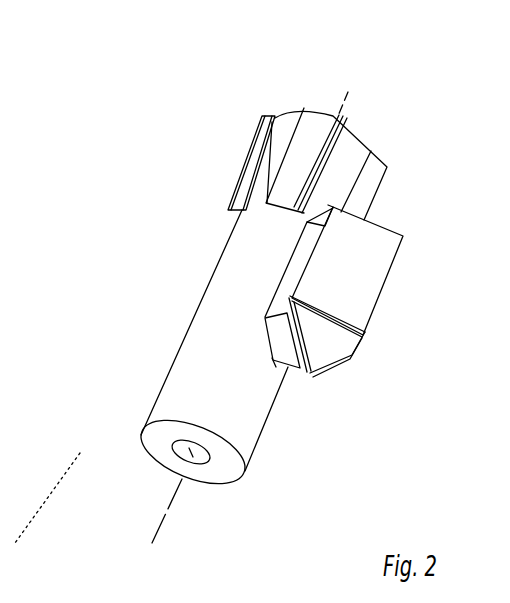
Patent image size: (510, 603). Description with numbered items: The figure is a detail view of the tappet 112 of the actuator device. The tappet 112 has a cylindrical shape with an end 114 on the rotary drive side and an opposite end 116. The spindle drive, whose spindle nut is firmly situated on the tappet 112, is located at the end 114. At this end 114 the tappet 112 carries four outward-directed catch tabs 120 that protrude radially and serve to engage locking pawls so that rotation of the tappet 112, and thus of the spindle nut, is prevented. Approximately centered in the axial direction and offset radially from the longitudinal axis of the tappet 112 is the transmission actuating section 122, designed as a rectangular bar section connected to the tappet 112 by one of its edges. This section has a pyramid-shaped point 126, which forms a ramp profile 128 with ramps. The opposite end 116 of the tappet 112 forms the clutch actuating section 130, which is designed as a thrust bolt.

The tappet 112 is at (212, 307).
The end on the rotary drive side 114 is at (304, 108).
The opposite end 116 is at (144, 453).
The catch tab 120 is at (292, 163).
The transmission actuating section 122 is at (388, 257).
The pyramid-shaped point 126 is at (306, 372).
The ramp profile 128 is at (323, 347).
The clutch actuating section 130 is at (213, 468).